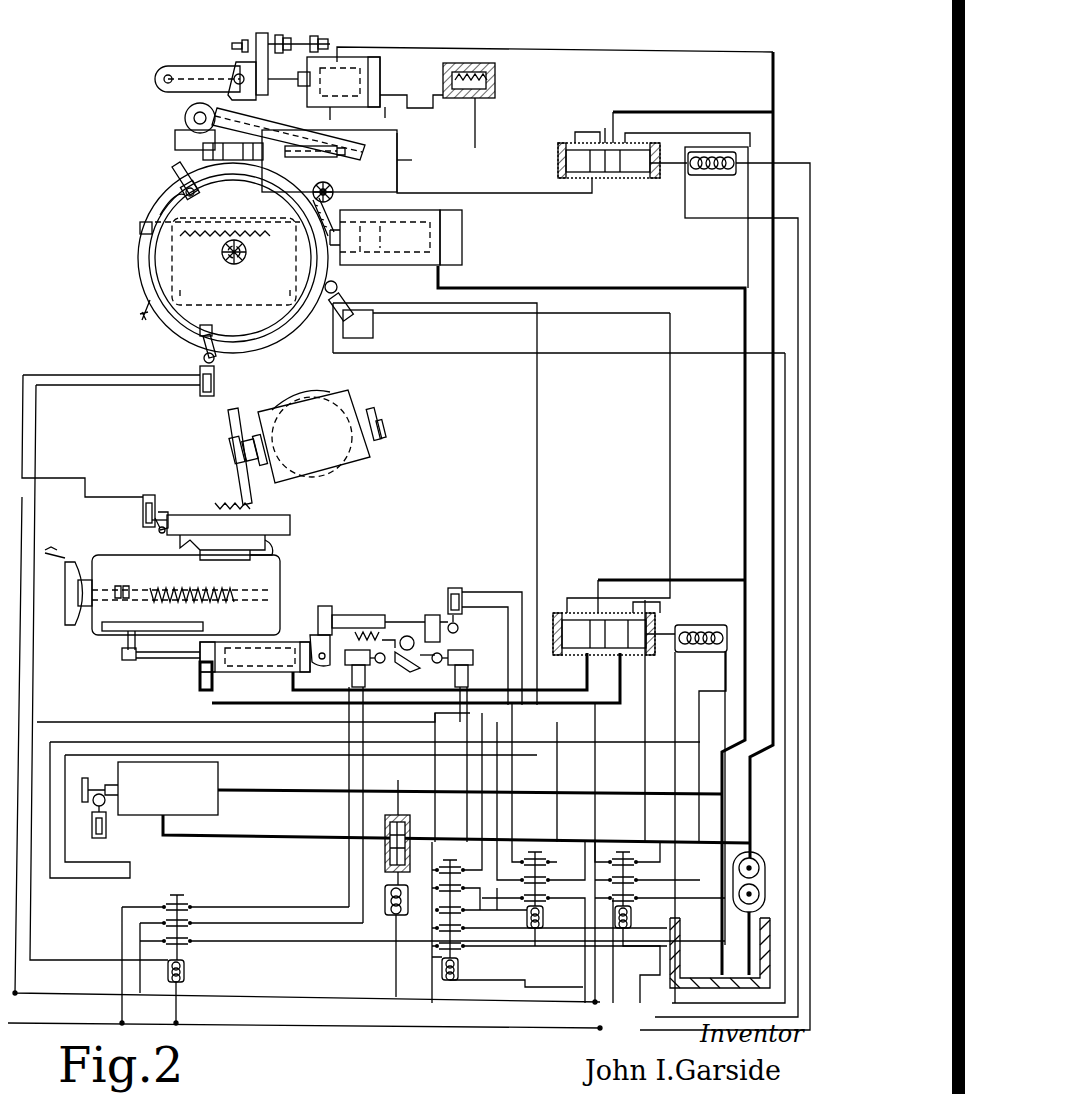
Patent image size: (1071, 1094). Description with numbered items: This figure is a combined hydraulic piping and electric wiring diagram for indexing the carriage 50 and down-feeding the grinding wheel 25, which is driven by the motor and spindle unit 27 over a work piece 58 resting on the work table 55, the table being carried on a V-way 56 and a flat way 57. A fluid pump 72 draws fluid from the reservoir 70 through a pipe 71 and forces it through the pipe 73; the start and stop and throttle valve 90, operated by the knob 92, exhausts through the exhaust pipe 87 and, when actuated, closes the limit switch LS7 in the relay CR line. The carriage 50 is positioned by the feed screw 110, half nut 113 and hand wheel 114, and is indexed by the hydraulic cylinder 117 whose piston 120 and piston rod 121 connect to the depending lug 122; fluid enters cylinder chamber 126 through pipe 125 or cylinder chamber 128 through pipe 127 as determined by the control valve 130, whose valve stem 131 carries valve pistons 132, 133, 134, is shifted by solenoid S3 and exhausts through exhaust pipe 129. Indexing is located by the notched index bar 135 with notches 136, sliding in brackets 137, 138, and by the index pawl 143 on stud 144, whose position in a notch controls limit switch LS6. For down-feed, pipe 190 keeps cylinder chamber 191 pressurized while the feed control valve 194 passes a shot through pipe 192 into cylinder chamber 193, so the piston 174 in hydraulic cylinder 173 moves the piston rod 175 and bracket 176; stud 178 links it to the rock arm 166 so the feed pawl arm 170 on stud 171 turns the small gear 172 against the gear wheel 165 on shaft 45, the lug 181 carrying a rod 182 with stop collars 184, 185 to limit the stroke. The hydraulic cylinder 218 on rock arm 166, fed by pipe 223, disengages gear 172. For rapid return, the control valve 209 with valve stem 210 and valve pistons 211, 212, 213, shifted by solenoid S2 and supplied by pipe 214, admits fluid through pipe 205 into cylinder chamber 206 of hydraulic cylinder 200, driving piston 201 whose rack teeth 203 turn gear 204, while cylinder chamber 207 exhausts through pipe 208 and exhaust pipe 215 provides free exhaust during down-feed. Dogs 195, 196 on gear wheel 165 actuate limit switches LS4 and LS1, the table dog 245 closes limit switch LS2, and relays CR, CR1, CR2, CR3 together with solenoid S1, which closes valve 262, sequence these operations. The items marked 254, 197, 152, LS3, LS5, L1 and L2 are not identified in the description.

The stud 178 is at (155, 78).
The feed pawl arm 170 is at (272, 125).
The vertically extending bracket 176 is at (262, 32).
The stop collar 184 is at (242, 44).
The rod 182 is at (232, 42).
The stop collar 185 is at (283, 38).
The upwardly extending lug 181 is at (322, 38).
The piston rod 175 is at (303, 72).
The pipe 190 is at (385, 48).
The cylinder chamber 193 is at (390, 58).
The cylinder chamber 191 is at (339, 117).
The pipe 192 is at (385, 85).
The feed control valve 194 is at (495, 78).
The conduit 254 is at (492, 123).
The hydraulic cylinder 173 is at (392, 110).
The stud 171 is at (185, 114).
The rock arm 166 is at (178, 142).
The hydraulic cylinder 218 is at (203, 150).
The pipe 223 is at (195, 165).
The adjustable dog 195 is at (185, 182).
The gear wheel 165 is at (170, 202).
The small gear 172 is at (340, 156).
The piston 174 is at (476, 163).
The cylinder chamber 206 is at (340, 190).
The pipe 205 is at (425, 181).
The ring 197 is at (138, 262).
The rack teeth 203 is at (140, 243).
The gear 204 is at (226, 282).
The shaft 45 is at (248, 278).
The dog 196 is at (218, 350).
The limit switch LS1 is at (187, 391).
The limit switch LS4 is at (340, 320).
The piston 201 is at (368, 250).
The hydraulic cylinder 200 is at (462, 222).
The cylinder chamber 207 is at (450, 243).
The pipe 208 is at (535, 288).
The pipe 73 is at (638, 50).
The control valve 209 is at (558, 145).
The valve piston 211 is at (575, 128).
The valve piston 212 is at (603, 128).
The valve piston 213 is at (626, 110).
The pipe 214 is at (705, 112).
The exhaust pipe 215 is at (740, 133).
The valve stem 210 is at (660, 180).
The solenoid S2 is at (725, 588).
The motor and spindle unit 27 is at (338, 392).
The grinding wheel 25 is at (228, 425).
The work piece 58 is at (213, 510).
The work table 55 is at (290, 517).
The V-way 56 is at (180, 543).
The flat way 57 is at (278, 543).
The limit switch LS2 is at (307, 688).
The adjustable table dog 245 is at (162, 512).
The carriage 50 is at (120, 556).
The hand wheel 114 is at (68, 622).
The feed screw 110 is at (125, 585).
The half nut 113 is at (150, 588).
The depending lug 122 is at (128, 640).
The piston rod 121 is at (150, 655).
The cylinder chamber 128 is at (200, 658).
The piston 120 is at (228, 672).
The hydraulic cylinder 117 is at (200, 678).
The bracket 137 is at (322, 606).
The notches 136 is at (355, 612).
The index pawl 143 is at (388, 630).
The stud 144 is at (407, 636).
The notched index bar 135 is at (432, 615).
The bracket 138 is at (452, 610).
The limit switch LS3 is at (481, 632).
The limit switch LS5 is at (362, 779).
The arm 152 is at (425, 660).
The limit switch LS6 is at (453, 736).
The pipe 127 is at (210, 705).
The pipe 125 is at (300, 694).
The cylinder chamber 126 is at (272, 680).
The control valve 130 is at (555, 612).
The exhaust pipe 129 is at (580, 598).
The valve stem 131 is at (655, 614).
The valve piston 132 is at (572, 655).
The valve piston 133 is at (603, 655).
The valve piston 134 is at (636, 655).
The solenoid S3 is at (701, 802).
The start and stop and throttle valve 90 is at (222, 805).
The actuating knob 92 is at (95, 780).
The limit switch LS7 is at (95, 830).
The exhaust pipe 87 is at (295, 790).
The valve 262 is at (385, 828).
The solenoid S1 is at (352, 888).
The relay CR is at (423, 959).
The relay CR1 is at (549, 801).
The relay CR2 is at (533, 922).
The relay CR3 is at (660, 922).
The line L1 is at (323, 857).
The line L2 is at (305, 1020).
The fluid pump 72 is at (752, 852).
The pipe 71 is at (734, 960).
The reservoir 70 is at (690, 965).